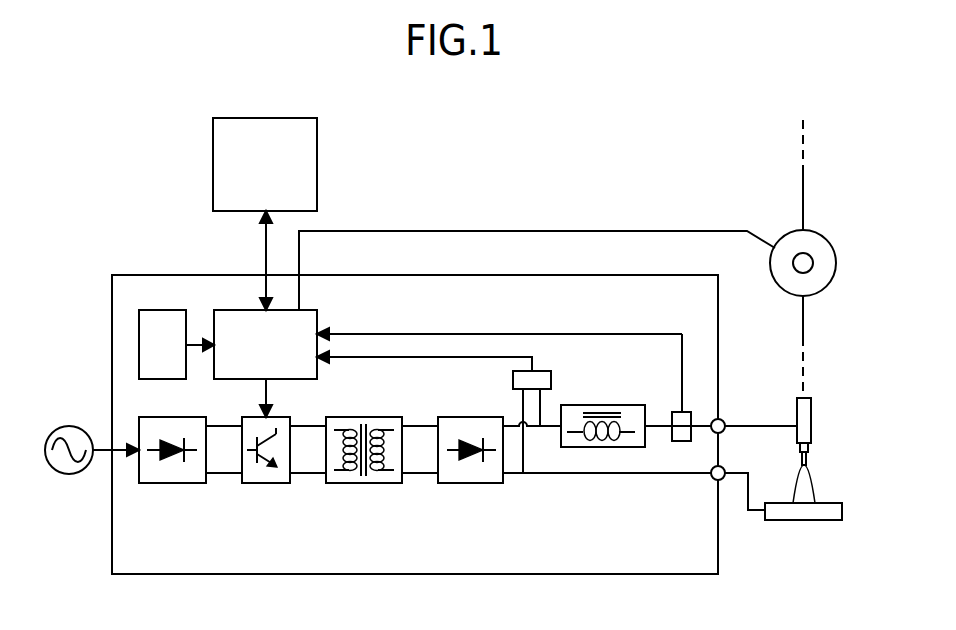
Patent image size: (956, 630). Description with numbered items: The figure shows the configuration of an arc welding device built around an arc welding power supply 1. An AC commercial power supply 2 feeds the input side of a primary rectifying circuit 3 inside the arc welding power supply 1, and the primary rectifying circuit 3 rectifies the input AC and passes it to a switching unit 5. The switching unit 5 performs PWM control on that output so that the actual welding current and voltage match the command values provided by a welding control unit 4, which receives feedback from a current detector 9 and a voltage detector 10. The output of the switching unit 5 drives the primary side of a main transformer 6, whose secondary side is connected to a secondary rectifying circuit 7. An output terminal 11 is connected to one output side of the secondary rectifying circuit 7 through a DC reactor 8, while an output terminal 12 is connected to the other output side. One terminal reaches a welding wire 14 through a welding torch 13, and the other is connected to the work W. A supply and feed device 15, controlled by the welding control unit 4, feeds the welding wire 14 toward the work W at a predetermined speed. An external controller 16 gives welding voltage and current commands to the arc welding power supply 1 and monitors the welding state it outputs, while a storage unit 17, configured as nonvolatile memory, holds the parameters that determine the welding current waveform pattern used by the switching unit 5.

The arc welding power supply 1 is at (672, 275).
The AC commercial power supply 2 is at (70, 426).
The primary rectifying circuit 3 is at (190, 483).
The welding control unit 4 is at (303, 310).
The switching unit 5 is at (268, 483).
The main transformer 6 is at (379, 483).
The secondary rectifying circuit 7 is at (485, 483).
The DC reactor 8 is at (619, 406).
The current detector 9 is at (688, 412).
The voltage detector 10 is at (541, 371).
The output terminal 11 is at (724, 420).
The output terminal 12 is at (721, 481).
The welding torch 13 is at (810, 425).
The welding wire 14 is at (804, 383).
The supply and feed device 15 is at (828, 244).
The external controller 16 is at (286, 118).
The storage unit 17 is at (159, 310).
The work W is at (803, 520).